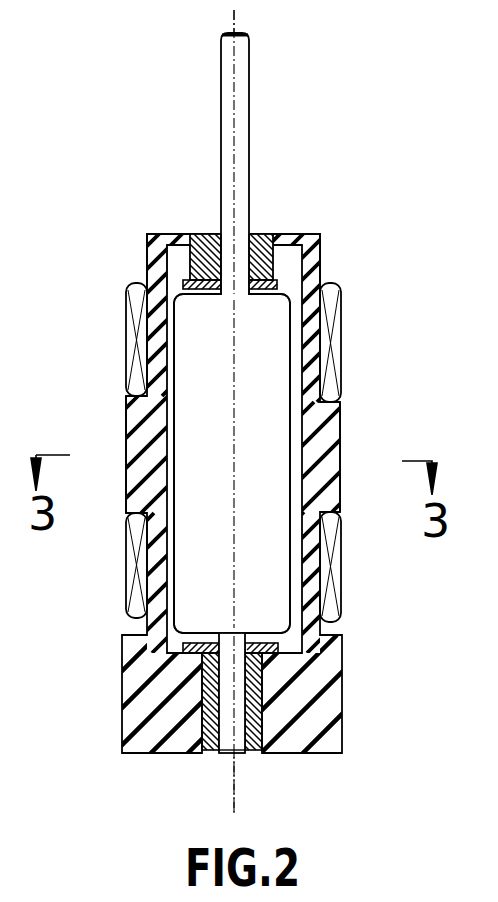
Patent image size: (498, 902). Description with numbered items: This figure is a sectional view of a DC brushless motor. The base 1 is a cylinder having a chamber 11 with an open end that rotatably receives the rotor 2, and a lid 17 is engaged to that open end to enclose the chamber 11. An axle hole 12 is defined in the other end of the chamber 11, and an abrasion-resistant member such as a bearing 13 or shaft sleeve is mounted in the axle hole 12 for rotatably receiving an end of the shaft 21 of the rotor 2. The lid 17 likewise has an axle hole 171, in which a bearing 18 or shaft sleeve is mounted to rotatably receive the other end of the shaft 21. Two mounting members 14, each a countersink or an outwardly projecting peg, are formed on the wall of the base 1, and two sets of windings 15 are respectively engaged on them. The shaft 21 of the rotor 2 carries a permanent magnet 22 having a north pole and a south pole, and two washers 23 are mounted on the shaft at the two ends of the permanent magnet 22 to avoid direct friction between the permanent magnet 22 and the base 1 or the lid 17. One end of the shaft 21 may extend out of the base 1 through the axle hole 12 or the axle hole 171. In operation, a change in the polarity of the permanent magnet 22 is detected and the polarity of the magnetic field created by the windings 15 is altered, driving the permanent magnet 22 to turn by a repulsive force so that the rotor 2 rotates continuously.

The base 1 is at (310, 555).
The rotor 2 is at (295, 280).
The chamber 11 is at (175, 268).
The axle hole 12 is at (237, 740).
The bearing 13 is at (210, 745).
The mounting member 14 is at (132, 437).
The winding 15 is at (128, 350).
The lid 17 is at (160, 236).
The axle hole 171 is at (218, 235).
The bearing 18 is at (250, 235).
The shaft 21 is at (245, 76).
The permanent magnet 22 is at (275, 358).
The washer 23 is at (283, 275).